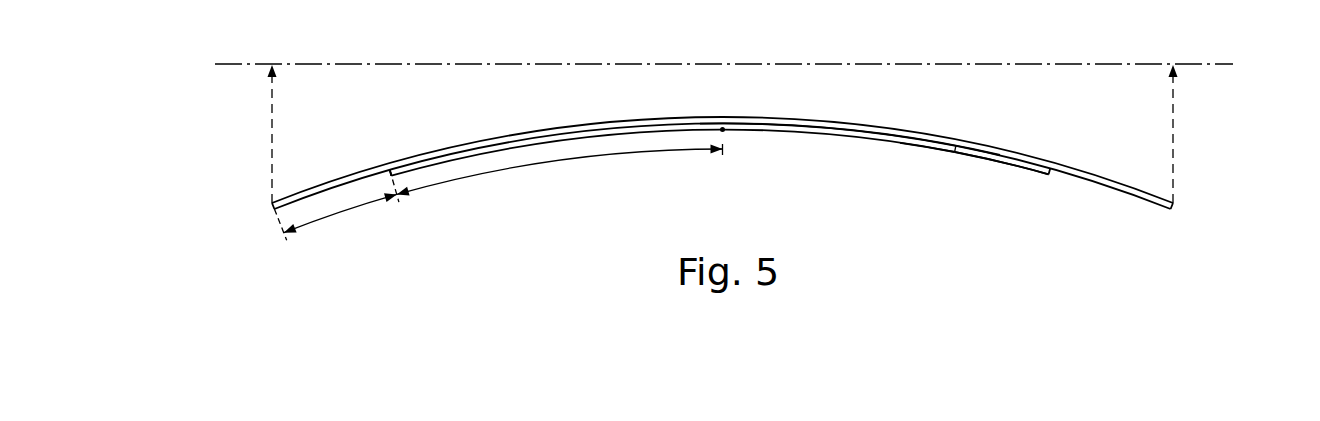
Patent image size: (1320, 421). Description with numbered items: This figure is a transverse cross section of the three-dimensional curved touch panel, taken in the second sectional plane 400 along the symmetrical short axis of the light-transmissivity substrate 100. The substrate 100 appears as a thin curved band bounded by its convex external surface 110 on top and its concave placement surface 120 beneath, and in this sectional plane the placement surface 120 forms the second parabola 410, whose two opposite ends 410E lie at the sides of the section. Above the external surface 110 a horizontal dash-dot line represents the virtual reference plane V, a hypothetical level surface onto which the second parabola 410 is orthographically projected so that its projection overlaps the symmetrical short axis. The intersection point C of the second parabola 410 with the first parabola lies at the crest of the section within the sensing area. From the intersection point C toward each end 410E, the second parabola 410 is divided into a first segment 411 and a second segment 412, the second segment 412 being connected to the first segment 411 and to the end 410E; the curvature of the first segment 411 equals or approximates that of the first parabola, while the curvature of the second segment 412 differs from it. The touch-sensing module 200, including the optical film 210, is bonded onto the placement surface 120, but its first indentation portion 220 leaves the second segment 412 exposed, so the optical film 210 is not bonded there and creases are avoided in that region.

The second sectional plane 400 is at (1297, 30).
The second parabola 410 is at (1082, 182).
The end of the second parabola 410E is at (270, 206).
The first segment 411 is at (564, 161).
The second segment 412 is at (354, 209).
The touch-sensing module 200 is at (816, 138).
The optical film 210 is at (878, 141).
The first indentation portion 220 is at (382, 160).
The light-transmissivity substrate 100 is at (1033, 222).
The external surface 110 is at (951, 156).
The placement surface 120 is at (1009, 168).
The intersection point C is at (724, 131).
The virtual reference plane V is at (724, 49).